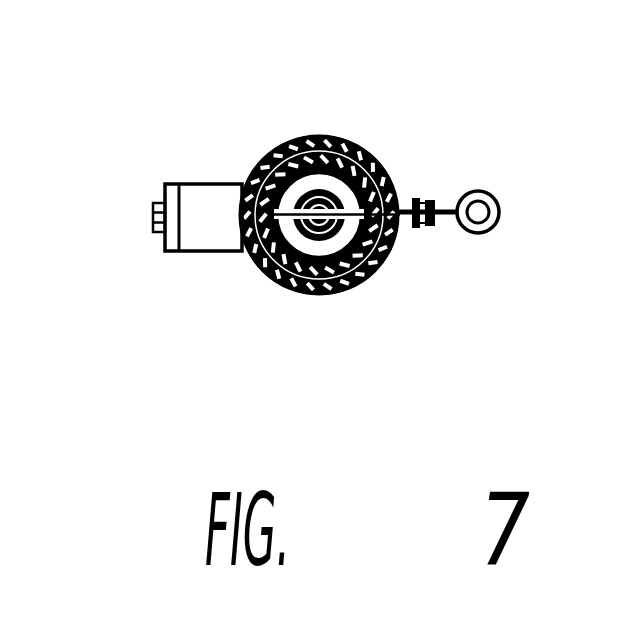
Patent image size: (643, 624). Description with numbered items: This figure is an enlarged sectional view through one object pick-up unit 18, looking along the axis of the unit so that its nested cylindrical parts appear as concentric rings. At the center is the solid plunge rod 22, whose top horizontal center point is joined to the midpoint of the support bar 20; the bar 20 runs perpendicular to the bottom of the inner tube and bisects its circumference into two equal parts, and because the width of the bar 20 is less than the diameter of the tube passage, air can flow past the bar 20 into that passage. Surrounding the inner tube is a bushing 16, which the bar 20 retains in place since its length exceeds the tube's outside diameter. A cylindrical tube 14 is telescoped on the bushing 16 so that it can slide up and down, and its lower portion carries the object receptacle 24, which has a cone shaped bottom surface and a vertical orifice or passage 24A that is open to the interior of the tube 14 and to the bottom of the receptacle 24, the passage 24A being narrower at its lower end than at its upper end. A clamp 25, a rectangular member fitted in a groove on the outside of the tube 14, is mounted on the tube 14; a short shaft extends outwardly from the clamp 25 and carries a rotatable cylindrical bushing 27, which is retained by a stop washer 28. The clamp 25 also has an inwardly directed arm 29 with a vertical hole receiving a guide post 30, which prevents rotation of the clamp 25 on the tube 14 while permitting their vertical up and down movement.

The cylindrical tube 14 is at (260, 161).
The bushing 16 is at (295, 140).
The object pick-up unit 18 is at (343, 137).
The support bar 20 is at (390, 177).
The plunge rod 22 is at (322, 241).
The object receptacle 24 is at (357, 280).
The vertical orifice or passage 24A is at (372, 270).
The clamp 25 is at (280, 290).
The cylindrical bushing 27 is at (207, 228).
The stop washer 28 is at (178, 240).
The inwardly directed arm 29 is at (437, 205).
The guide post 30 is at (480, 213).